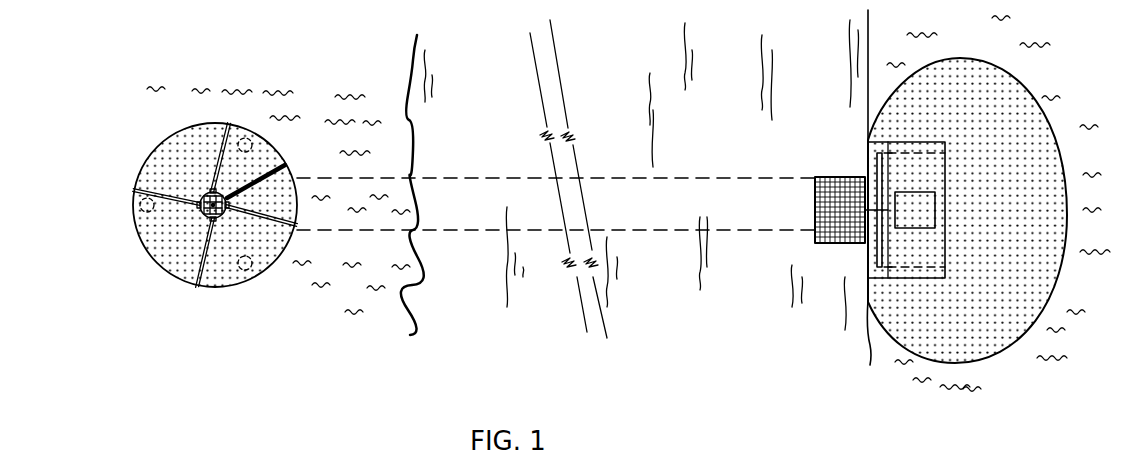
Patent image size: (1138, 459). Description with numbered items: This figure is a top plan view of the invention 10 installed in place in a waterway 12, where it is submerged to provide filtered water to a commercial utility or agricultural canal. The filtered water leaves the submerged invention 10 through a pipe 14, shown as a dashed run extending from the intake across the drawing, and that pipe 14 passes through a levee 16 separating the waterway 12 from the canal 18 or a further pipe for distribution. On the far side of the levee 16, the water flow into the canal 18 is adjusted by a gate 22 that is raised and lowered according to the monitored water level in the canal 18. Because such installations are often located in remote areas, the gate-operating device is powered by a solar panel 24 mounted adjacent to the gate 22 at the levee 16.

The invention 10 is at (140, 153).
The waterway 12 is at (628, 204).
The pipe 14 is at (673, 237).
The levee 16 is at (614, 47).
The canal 18 is at (1117, 121).
The gate 22 is at (873, 170).
The solar panel 24 is at (838, 243).